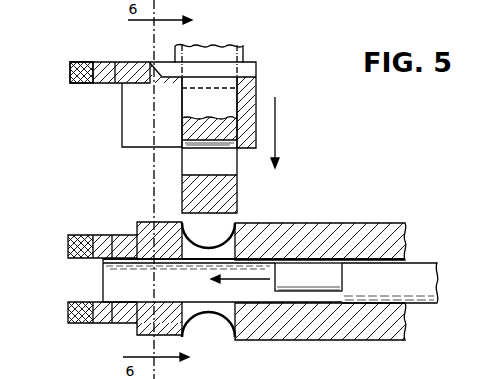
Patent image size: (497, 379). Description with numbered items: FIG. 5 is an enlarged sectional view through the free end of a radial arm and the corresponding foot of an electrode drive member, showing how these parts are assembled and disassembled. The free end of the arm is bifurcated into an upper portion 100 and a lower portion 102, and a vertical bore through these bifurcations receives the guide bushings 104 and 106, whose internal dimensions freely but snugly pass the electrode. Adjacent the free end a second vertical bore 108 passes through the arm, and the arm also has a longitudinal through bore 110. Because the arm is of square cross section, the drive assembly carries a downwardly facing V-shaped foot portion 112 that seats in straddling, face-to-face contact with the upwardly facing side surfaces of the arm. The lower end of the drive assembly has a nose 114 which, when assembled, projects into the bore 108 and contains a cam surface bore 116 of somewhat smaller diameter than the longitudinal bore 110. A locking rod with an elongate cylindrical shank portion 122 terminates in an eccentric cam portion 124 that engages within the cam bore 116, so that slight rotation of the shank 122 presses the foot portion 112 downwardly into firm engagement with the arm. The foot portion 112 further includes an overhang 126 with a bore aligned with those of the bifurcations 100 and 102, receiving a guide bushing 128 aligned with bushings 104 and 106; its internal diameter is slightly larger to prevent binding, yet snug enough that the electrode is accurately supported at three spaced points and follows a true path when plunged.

The upper portion 100 is at (68, 245).
The lower portion 102 is at (68, 308).
The guide bushing 104 is at (104, 235).
The guide bushing 106 is at (107, 323).
The second vertical bore 108 is at (228, 243).
The longitudinal through bore 110 is at (267, 262).
The foot portion 112 is at (245, 69).
The nose 114 is at (220, 105).
The cam surface bore 116 is at (182, 170).
The shank portion 122 is at (417, 277).
The eccentric cam portion 124 is at (323, 270).
The overhang 126 is at (70, 70).
The guide bushing 128 is at (87, 62).